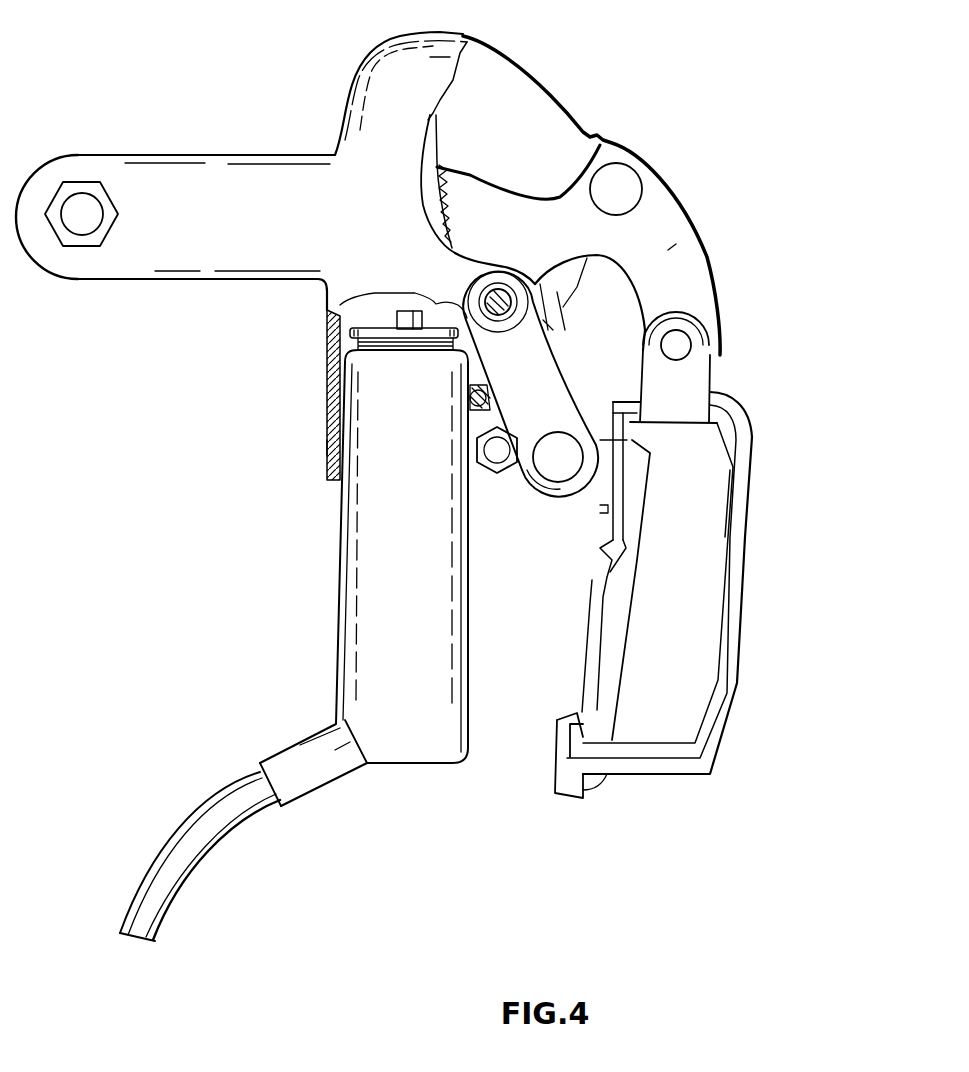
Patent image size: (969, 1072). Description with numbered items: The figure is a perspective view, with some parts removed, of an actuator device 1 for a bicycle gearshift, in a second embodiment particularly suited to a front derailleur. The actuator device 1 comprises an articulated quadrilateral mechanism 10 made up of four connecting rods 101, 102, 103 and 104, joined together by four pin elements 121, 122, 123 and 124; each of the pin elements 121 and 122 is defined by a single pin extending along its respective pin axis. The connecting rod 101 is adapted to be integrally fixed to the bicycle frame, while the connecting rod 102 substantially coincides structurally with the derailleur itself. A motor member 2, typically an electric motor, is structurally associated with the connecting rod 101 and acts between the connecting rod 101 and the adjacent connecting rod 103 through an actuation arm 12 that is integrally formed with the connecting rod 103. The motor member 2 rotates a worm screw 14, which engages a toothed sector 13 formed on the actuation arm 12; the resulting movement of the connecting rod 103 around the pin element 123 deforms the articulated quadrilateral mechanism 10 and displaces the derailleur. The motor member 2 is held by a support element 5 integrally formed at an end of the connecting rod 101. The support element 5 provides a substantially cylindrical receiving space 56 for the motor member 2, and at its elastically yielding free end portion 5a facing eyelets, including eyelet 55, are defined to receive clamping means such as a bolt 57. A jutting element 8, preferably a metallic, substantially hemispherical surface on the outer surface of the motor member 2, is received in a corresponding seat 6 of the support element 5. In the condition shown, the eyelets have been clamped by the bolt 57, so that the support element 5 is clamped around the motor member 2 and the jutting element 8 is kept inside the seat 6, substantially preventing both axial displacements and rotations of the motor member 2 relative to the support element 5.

The actuator device 1 is at (197, 81).
The connecting rod 101 is at (383, 103).
The actuation arm 12 is at (512, 217).
The toothed sector 13 is at (456, 199).
The worm screw 14 is at (433, 135).
The pin element 123 is at (625, 188).
The connecting rod 103 is at (670, 247).
The articulated quadrilateral mechanism 10 is at (714, 248).
The pin element 121 is at (507, 303).
The pin element 122 is at (680, 346).
The seat 6 is at (505, 395).
The pin element 124 is at (563, 467).
The connecting rod 104 is at (540, 397).
The connecting rod 102 is at (758, 466).
The motor member 2 is at (367, 630).
The eyelet 55 is at (477, 477).
The receiving space 56 is at (384, 318).
The support element 5 is at (332, 377).
The free end portion 5a is at (323, 446).
The bolt 57 is at (493, 458).
The jutting element 8 is at (467, 403).